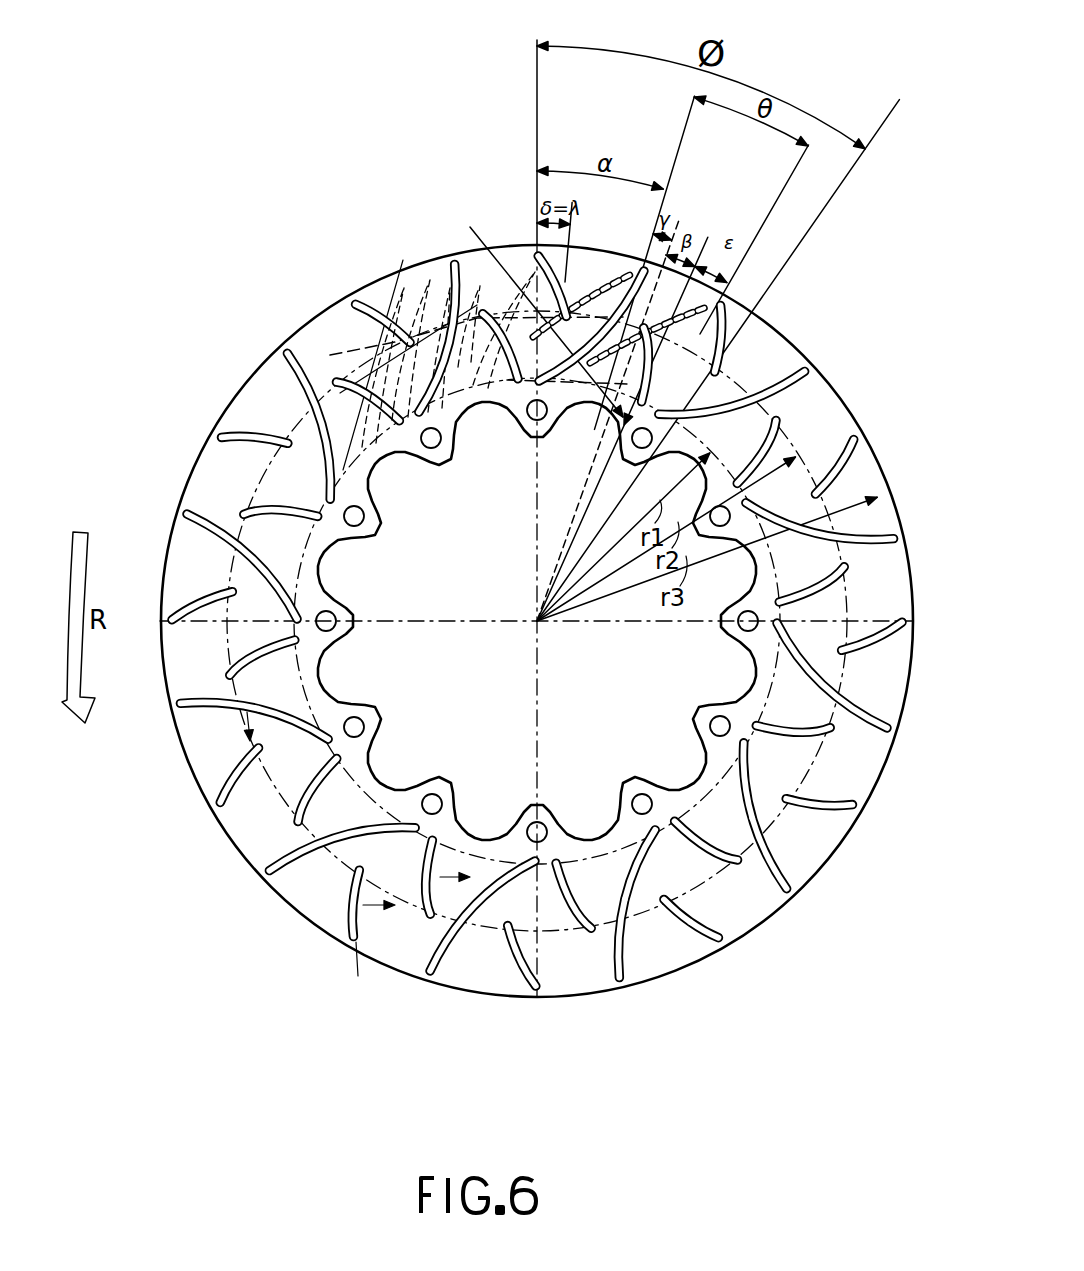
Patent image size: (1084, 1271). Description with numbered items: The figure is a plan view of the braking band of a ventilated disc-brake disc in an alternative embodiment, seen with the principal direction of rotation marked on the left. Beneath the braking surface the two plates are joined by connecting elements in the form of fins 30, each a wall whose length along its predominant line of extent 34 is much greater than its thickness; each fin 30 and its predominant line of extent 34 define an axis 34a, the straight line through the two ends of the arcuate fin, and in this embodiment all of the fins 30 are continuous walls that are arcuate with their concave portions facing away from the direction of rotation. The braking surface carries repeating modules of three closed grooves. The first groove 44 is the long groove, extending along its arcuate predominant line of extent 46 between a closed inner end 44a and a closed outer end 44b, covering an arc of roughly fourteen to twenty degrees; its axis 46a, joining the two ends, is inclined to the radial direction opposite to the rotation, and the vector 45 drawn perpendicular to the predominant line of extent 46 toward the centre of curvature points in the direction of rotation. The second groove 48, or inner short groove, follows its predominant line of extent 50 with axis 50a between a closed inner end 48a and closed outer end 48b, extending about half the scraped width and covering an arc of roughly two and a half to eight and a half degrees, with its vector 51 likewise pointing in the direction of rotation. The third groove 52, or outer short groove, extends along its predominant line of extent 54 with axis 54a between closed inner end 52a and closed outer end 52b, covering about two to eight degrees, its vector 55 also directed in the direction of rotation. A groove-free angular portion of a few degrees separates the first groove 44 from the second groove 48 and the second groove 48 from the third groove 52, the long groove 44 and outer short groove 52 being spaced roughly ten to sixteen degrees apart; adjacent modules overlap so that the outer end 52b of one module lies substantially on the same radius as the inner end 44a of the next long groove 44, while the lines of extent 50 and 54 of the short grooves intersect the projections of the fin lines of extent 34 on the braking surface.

The fin 30 is at (345, 330).
The predominant line of extent 34 is at (406, 280).
The axis of the fin 34a is at (428, 278).
The first groove 44 is at (631, 871).
The inner end 44a is at (653, 808).
The outer end 44b is at (620, 983).
The vector 45 is at (245, 728).
The predominant line of extent 46 is at (263, 721).
The axis of the first groove 46a is at (341, 702).
The second groove 48 is at (810, 837).
The inner end 48a is at (676, 818).
The outer end 48b is at (780, 857).
The predominant line of extent 50 is at (432, 972).
The axis of the second groove 50a is at (448, 842).
The vector 51 is at (455, 862).
The third groove 52 is at (746, 994).
The inner end 52a is at (658, 905).
The outer end 52b is at (724, 945).
The predominant line of extent 54 is at (355, 948).
The axis of the third groove 54a is at (363, 965).
The vector 55 is at (380, 912).